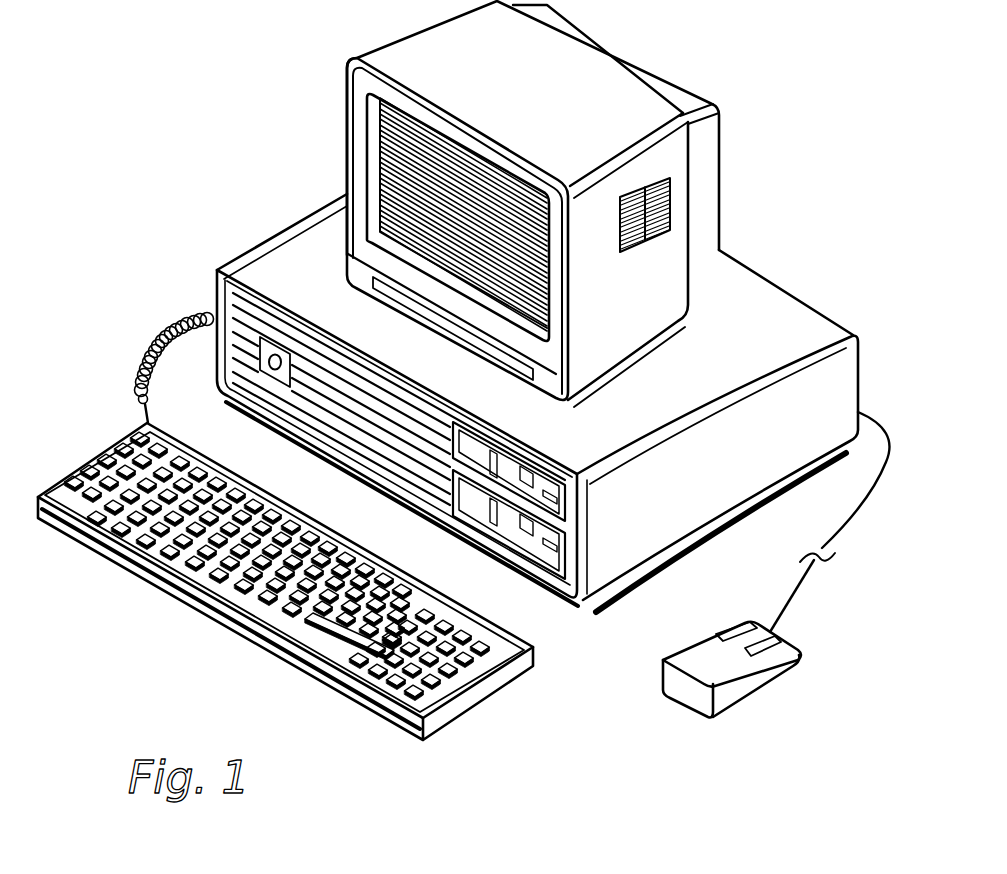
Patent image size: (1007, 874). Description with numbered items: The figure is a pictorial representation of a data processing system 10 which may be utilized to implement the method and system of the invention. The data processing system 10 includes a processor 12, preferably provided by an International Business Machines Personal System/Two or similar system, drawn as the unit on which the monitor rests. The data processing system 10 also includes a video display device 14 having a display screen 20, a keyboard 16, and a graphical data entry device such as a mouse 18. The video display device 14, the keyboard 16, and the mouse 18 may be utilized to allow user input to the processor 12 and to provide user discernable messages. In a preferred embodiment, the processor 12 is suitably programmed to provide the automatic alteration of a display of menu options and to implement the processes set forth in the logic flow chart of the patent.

The data processing system 10 is at (241, 97).
The processor 12 is at (718, 500).
The video display device 14 is at (707, 217).
The keyboard 16 is at (340, 667).
The mouse 18 is at (690, 697).
The display screen 20 is at (543, 273).